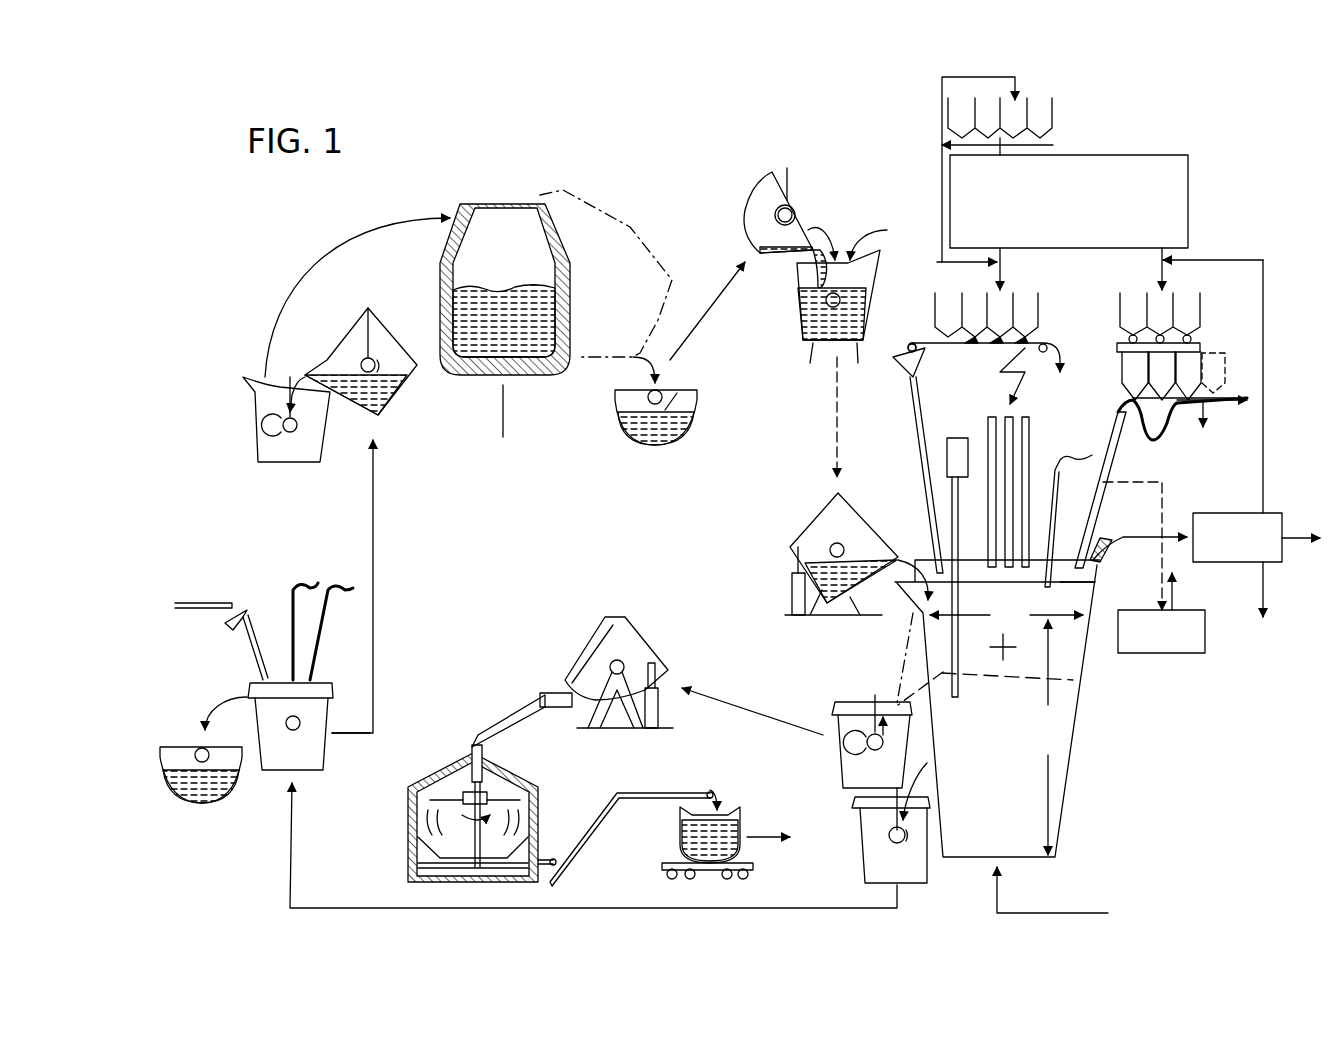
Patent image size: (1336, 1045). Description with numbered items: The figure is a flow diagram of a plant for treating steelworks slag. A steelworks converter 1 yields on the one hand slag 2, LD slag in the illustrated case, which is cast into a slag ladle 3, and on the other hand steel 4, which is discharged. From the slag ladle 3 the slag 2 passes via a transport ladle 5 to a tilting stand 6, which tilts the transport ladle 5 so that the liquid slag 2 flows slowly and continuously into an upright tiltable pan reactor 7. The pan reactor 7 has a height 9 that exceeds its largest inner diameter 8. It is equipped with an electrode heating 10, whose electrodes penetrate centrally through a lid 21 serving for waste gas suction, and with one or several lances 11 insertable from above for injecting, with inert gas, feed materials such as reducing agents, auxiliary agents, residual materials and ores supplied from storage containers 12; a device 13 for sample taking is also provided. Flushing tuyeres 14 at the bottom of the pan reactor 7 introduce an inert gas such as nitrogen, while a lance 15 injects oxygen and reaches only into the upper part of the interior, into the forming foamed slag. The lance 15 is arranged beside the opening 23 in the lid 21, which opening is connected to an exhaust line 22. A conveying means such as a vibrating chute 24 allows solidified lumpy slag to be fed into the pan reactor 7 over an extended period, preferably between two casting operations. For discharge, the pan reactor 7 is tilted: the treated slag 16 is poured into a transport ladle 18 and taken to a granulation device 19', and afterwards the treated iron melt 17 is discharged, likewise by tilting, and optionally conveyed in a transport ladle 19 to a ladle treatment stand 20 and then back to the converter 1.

The steelworks converter 1 is at (567, 240).
The slag 2 is at (830, 253).
The slag ladle 3 is at (760, 187).
The steel 4 is at (503, 400).
The transport ladle 5 is at (800, 302).
The tilting stand 6 is at (840, 605).
The tiltable pan reactor 7 is at (1080, 728).
The largest inner diameter 8 is at (1006, 614).
The height 9 is at (1048, 737).
The electrode heating 10 is at (1027, 457).
The lances 11 is at (1105, 470).
The storage containers 12 is at (1038, 122).
The device for sample taking 13 is at (957, 438).
The flushing tuyeres 14 is at (997, 885).
The lance 15 is at (1065, 463).
The treated slag 16 is at (892, 700).
The treated iron melt 17 is at (920, 773).
The transport ladle 18 is at (840, 758).
The transport ladle 19 is at (866, 846).
The granulation device 19' is at (490, 759).
The ladle treatment stand 20 is at (325, 758).
The lid 21 is at (913, 458).
The exhaust line 22 is at (1108, 538).
The opening 23 is at (1088, 570).
The vibrating chute 24 is at (864, 417).